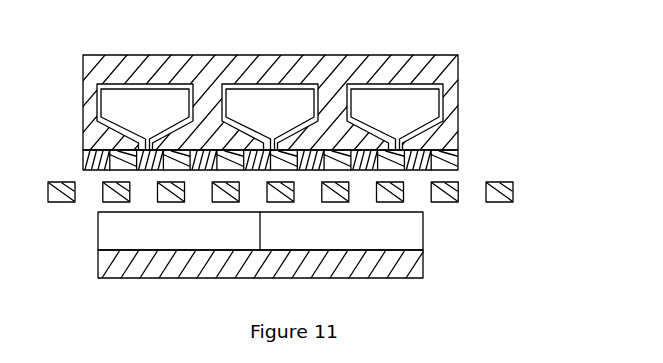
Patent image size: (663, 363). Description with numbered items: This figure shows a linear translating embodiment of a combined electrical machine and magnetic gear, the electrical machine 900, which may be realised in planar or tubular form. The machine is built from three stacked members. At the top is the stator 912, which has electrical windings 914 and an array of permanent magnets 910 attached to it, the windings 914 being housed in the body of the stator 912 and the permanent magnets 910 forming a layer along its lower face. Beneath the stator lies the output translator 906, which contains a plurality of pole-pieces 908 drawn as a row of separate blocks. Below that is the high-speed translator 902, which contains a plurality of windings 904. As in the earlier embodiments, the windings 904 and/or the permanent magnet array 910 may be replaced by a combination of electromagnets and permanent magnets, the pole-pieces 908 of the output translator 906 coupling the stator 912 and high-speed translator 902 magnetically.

The electrical machine 900 is at (458, 265).
The high-speed translator 902 is at (98, 266).
The windings 904 is at (118, 237).
The output translator 906 is at (467, 197).
The pole-pieces 908 is at (511, 184).
The permanent magnets 910 is at (458, 162).
The stator 912 is at (363, 55).
The electrical windings 914 is at (267, 107).